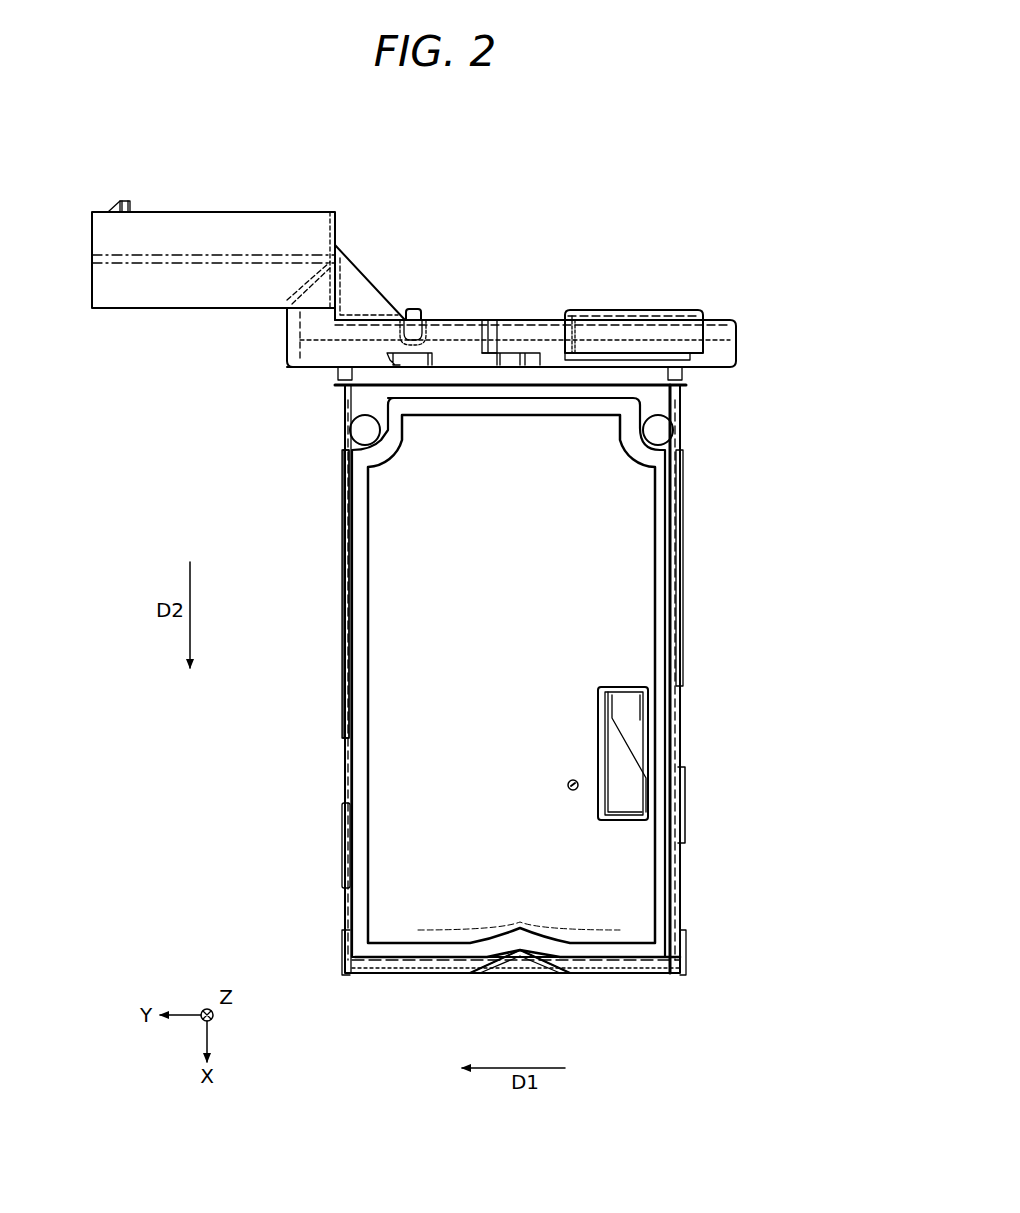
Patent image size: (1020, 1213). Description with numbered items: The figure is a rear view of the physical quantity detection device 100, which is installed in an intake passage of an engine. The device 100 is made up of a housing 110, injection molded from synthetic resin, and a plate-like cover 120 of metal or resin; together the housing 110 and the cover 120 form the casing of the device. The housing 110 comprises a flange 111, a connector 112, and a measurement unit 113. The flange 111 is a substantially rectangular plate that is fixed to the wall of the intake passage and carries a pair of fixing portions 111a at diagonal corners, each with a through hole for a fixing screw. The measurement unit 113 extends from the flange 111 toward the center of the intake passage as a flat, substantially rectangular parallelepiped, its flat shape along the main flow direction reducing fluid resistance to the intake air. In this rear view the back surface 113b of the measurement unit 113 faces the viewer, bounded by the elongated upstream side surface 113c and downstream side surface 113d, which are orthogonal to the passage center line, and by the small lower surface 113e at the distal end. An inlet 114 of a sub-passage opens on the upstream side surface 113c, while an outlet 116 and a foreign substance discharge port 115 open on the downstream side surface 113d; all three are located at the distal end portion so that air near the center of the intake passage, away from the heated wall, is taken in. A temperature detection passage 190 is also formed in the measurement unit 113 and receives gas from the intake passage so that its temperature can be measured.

The physical quantity detection device 100 is at (647, 176).
The housing 110 is at (686, 470).
The flange 111 is at (735, 316).
The fixing portion 111a is at (412, 310).
The connector 112 is at (200, 212).
The measurement unit 113 is at (343, 683).
The back surface 113b is at (425, 610).
The upstream side surface 113c is at (682, 630).
The downstream side surface 113d is at (345, 652).
The lower surface 113e is at (455, 975).
The inlet 114 is at (680, 890).
The foreign substance discharge port 115 is at (343, 913).
The outlet 116 is at (343, 778).
The cover 120 is at (422, 545).
The temperature detection passage 190 is at (686, 752).